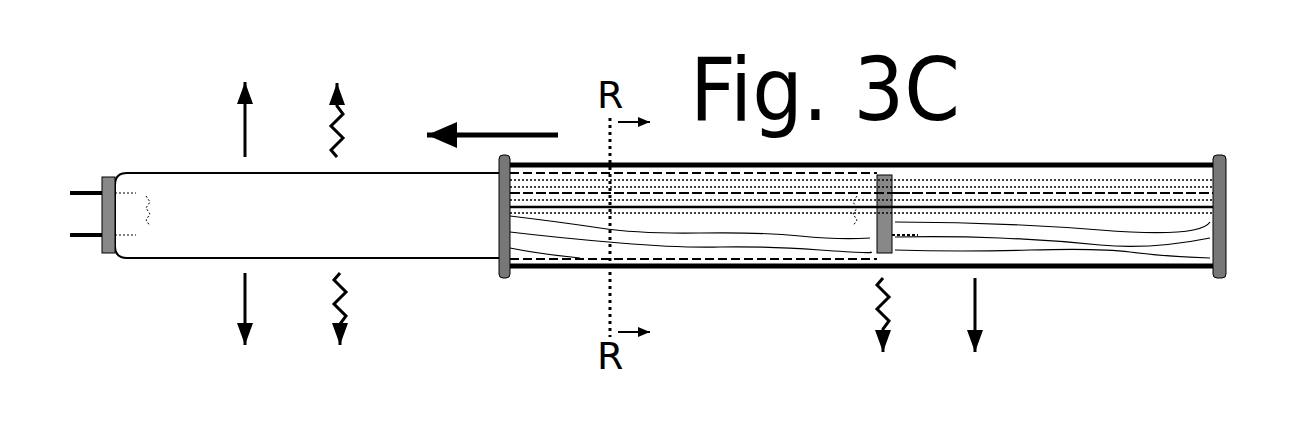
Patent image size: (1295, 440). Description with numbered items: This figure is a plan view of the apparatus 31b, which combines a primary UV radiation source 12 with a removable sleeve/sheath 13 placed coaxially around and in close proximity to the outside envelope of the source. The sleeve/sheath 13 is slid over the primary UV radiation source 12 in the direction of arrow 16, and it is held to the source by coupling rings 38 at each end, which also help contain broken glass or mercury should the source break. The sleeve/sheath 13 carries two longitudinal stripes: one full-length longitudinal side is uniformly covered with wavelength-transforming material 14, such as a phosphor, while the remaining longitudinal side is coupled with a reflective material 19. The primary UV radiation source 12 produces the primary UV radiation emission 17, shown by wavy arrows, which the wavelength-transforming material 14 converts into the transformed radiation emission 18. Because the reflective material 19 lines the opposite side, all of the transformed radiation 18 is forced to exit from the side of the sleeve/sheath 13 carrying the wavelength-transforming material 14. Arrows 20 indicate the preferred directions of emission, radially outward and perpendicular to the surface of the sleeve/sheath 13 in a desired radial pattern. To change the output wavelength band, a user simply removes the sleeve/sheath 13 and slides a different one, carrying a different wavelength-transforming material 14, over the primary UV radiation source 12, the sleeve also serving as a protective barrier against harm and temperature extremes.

The primary UV radiation source 12 is at (188, 158).
The sleeve/sheath 13 is at (990, 145).
The wavelength-transforming material 14 is at (1158, 242).
The arrow 16 is at (492, 113).
The primary UV radiation emission 17 is at (339, 218).
The transformed radiation emission 18 is at (876, 334).
The reflective material 19 is at (1125, 168).
The preferred direction of emission 20 is at (611, 220).
The apparatus 31b is at (138, 320).
The coupling ring 38 is at (488, 288).